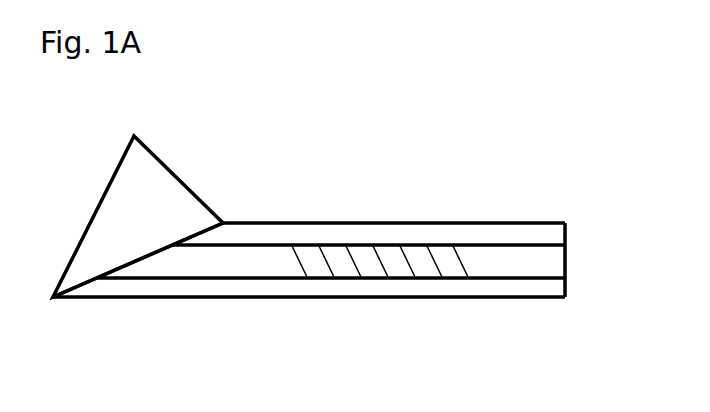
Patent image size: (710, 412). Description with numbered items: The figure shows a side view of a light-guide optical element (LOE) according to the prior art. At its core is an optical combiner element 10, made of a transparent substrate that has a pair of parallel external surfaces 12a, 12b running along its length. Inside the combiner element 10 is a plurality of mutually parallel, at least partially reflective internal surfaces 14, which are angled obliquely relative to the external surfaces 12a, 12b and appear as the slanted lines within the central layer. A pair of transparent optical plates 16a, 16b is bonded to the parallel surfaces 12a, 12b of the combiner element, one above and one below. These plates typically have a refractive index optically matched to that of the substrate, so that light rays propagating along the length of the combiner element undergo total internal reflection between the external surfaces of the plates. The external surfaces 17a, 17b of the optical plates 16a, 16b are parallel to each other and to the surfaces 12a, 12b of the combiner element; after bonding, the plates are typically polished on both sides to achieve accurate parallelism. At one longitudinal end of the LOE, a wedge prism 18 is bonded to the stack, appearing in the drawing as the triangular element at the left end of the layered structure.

The optical combiner element 10 is at (540, 260).
The external surface 12a is at (243, 243).
The external surface 12b is at (243, 279).
The at least partially reflective internal surfaces 14 is at (323, 264).
The transparent optical plate 16a is at (525, 232).
The transparent optical plate 16b is at (515, 290).
The external surface of optical plate 17a is at (538, 221).
The external surface of optical plate 17b is at (537, 299).
The wedge prism 18 is at (150, 188).